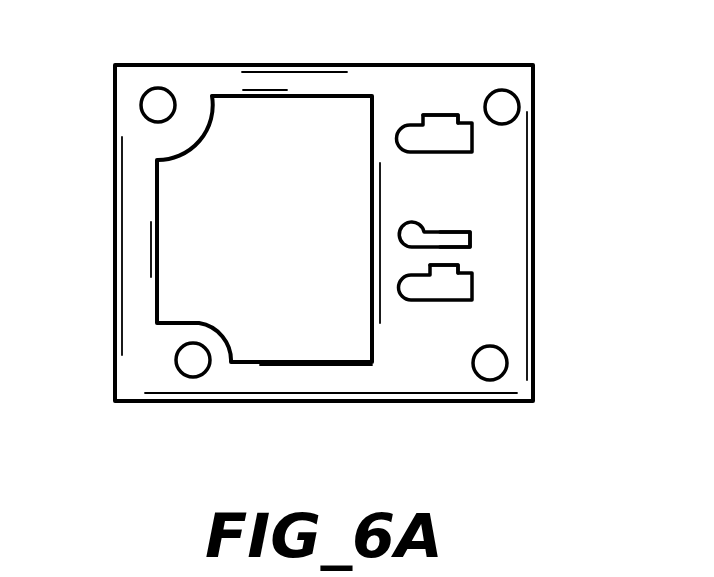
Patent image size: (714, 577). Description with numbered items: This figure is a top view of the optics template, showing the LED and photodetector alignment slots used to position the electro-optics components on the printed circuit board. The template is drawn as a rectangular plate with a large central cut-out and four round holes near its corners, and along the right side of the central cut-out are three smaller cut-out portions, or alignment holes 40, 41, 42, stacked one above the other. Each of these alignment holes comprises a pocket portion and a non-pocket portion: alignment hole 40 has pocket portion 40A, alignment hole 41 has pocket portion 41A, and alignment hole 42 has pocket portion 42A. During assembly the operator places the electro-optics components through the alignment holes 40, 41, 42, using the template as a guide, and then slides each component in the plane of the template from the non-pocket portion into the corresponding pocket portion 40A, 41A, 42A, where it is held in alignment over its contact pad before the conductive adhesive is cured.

The alignment hole 40 is at (398, 140).
The pocket portion 40A is at (447, 133).
The alignment hole 41 is at (400, 231).
The pocket portion 41A is at (452, 240).
The alignment hole 42 is at (398, 288).
The pocket portion 42A is at (448, 287).